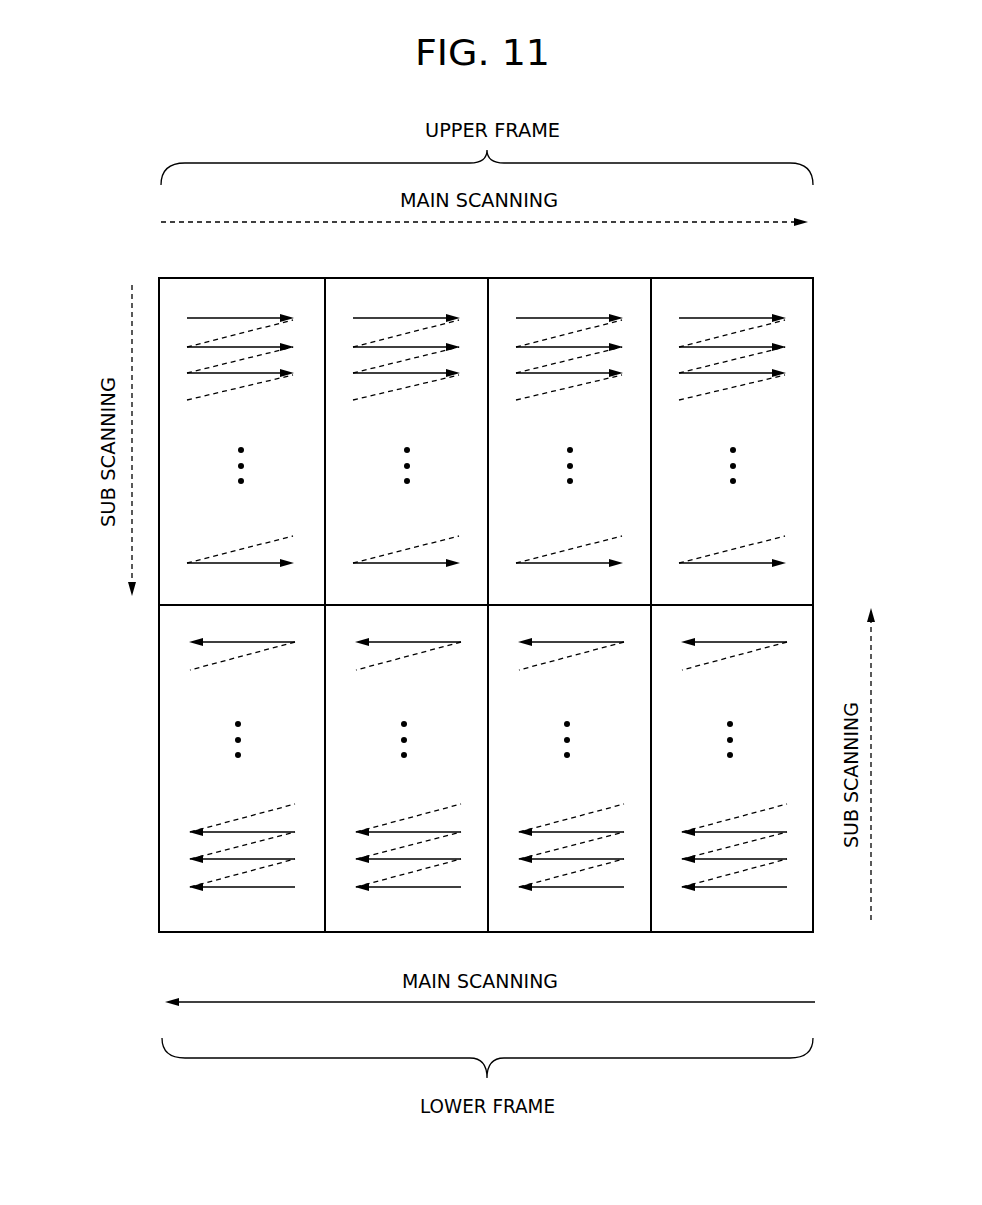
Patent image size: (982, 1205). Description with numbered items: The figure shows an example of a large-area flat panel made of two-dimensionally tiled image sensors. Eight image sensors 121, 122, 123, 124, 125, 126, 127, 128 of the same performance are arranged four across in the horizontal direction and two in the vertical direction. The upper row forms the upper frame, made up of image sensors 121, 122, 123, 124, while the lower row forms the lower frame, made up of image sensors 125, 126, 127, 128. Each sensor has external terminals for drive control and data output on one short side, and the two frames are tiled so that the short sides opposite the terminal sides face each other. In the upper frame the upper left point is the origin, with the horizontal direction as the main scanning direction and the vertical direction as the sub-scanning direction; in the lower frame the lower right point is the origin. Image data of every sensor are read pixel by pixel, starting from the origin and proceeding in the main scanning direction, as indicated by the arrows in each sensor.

The image sensor 121 is at (187, 373).
The image sensor 122 is at (430, 290).
The image sensor 123 is at (628, 435).
The image sensor 124 is at (770, 480).
The image sensor 125 is at (166, 740).
The image sensor 126 is at (383, 896).
The image sensor 127 is at (567, 895).
The image sensor 128 is at (782, 903).